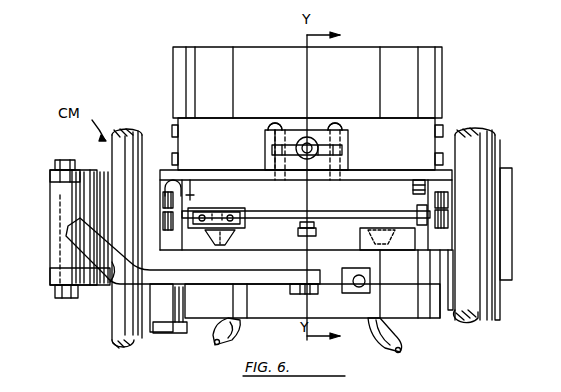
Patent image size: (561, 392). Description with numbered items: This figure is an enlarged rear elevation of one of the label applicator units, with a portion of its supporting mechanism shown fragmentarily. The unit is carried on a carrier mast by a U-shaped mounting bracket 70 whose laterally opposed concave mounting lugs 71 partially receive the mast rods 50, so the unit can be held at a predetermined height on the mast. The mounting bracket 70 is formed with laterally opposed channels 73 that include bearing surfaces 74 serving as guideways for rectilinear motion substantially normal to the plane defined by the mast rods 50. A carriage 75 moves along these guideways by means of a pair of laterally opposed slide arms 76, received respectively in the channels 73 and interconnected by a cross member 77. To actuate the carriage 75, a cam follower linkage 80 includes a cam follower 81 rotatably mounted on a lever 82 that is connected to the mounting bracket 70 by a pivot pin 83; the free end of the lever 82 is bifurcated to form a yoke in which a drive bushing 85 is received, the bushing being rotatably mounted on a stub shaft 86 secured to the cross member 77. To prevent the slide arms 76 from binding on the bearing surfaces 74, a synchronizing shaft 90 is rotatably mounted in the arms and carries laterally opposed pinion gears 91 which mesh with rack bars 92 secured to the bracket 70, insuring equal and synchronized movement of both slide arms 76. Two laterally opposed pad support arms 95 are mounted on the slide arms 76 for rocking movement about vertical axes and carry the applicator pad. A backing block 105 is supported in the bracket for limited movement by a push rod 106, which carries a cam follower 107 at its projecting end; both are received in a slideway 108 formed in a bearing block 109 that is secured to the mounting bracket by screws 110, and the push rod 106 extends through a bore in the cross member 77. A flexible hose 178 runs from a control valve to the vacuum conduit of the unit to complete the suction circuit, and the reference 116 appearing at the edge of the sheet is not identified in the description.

The mast rods 50 is at (125, 133).
The mounting bracket 70 is at (470, 322).
The mounting lugs 71 is at (98, 172).
The channels 73 is at (165, 190).
The bearing surfaces 74 is at (418, 183).
The carriage 75 is at (376, 175).
The slide arms 76 is at (200, 215).
The cross member 77 is at (268, 245).
The cam follower linkage 80 is at (90, 290).
The cam follower 81 is at (182, 308).
The lever 82 is at (257, 277).
The pivot pin 83 is at (66, 162).
The drive bushing 85 is at (325, 290).
The stub shaft 86 is at (312, 225).
The synchronizing shaft 90 is at (357, 211).
The pinion gears 91 is at (165, 220).
The rack bars 92 is at (165, 200).
The pad support arms 95 is at (200, 82).
The backing block 105 is at (290, 80).
The push rod 106 is at (306, 146).
The cam follower 107 is at (311, 147).
The slideway 108 is at (272, 152).
The bearing block 109 is at (272, 130).
The screws 110 is at (278, 130).
The member 116 is at (511, 384).
The flexible hoses 178 is at (255, 340).